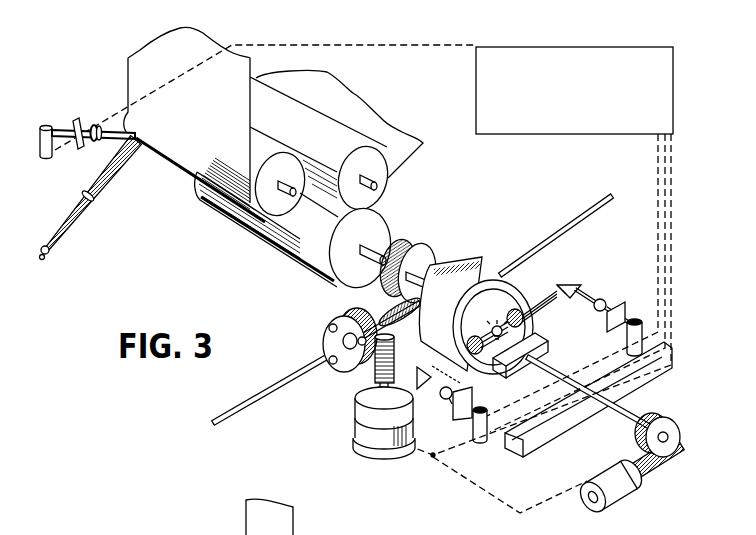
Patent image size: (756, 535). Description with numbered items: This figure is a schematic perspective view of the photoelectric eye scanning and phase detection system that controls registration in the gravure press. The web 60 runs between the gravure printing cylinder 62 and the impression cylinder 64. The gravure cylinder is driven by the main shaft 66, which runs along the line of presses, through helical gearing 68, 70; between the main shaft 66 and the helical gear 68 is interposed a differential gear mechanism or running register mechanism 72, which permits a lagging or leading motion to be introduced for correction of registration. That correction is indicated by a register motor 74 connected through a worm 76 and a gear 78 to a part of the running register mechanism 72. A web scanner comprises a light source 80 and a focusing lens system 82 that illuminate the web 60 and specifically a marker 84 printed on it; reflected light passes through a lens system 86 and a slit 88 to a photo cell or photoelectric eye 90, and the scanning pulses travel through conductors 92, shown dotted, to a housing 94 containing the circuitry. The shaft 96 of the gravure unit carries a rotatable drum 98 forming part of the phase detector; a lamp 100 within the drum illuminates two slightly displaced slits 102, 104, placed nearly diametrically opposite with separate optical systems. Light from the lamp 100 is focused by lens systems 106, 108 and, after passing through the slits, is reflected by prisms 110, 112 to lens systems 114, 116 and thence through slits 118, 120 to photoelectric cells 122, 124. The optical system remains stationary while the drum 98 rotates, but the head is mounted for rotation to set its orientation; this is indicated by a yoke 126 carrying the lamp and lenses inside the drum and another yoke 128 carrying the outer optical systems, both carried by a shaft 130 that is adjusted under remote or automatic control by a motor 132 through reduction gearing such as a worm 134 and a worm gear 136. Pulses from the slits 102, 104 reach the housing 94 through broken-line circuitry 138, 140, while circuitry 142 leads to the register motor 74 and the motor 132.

The web 60 is at (204, 46).
The gravure printing cylinder 62 is at (392, 218).
The impression cylinder 64 is at (327, 122).
The main shaft 66 is at (531, 242).
The helical gear 68 is at (408, 330).
The helical gear 70 is at (424, 246).
The differential gear mechanism (running register mechanism) 72 is at (326, 336).
The register motor 74 is at (355, 436).
The worm 76 is at (374, 380).
The gear 78 is at (341, 321).
The light source 80 is at (52, 252).
The focusing lens system 82 is at (100, 195).
The marker 84 is at (139, 134).
The lens system 86 is at (95, 141).
The slit 88 is at (76, 118).
The photo cell (photoelectric eye) 90 is at (43, 127).
The conductors 92 is at (377, 42).
The housing 94 is at (617, 60).
The shaft of gravure unit 96 is at (485, 265).
The rotatable drum 98 is at (523, 272).
The lamp 100 is at (499, 322).
The slit 102 is at (452, 338).
The slit 104 is at (527, 319).
The lens system 106 is at (470, 308).
The lens system 108 is at (529, 302).
The prism 110 is at (420, 390).
The prism 112 is at (573, 284).
The lens system 114 is at (450, 408).
The lens system 116 is at (602, 300).
The slit 118 is at (473, 400).
The slit 120 is at (624, 310).
The photoelectric cell 122 is at (480, 442).
The photoelectric cell 124 is at (646, 340).
The yoke 126 is at (547, 358).
The yoke 128 is at (657, 378).
The shaft 130 is at (633, 411).
The motor 132 is at (624, 501).
The worm 134 is at (672, 457).
The worm gear 136 is at (677, 429).
The circuitry 138 is at (674, 182).
The circuitry 140 is at (669, 206).
The circuitry 142 is at (657, 178).